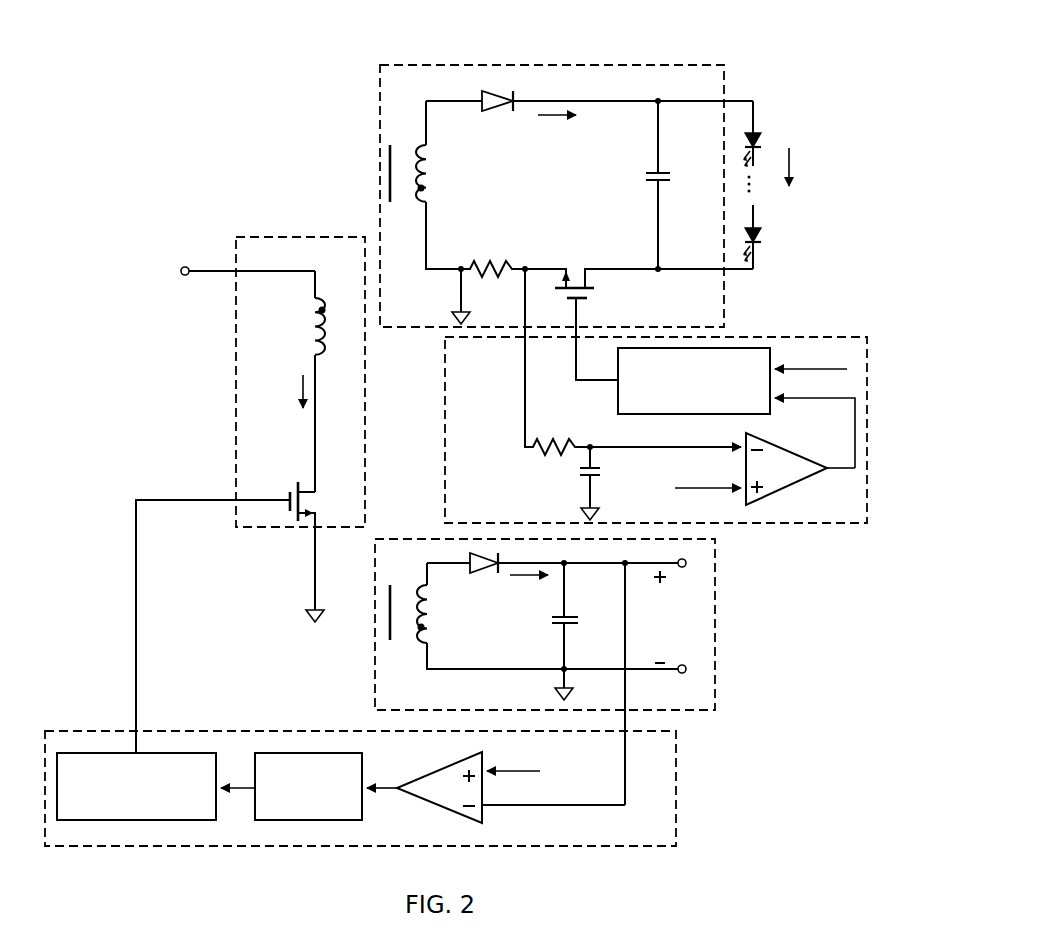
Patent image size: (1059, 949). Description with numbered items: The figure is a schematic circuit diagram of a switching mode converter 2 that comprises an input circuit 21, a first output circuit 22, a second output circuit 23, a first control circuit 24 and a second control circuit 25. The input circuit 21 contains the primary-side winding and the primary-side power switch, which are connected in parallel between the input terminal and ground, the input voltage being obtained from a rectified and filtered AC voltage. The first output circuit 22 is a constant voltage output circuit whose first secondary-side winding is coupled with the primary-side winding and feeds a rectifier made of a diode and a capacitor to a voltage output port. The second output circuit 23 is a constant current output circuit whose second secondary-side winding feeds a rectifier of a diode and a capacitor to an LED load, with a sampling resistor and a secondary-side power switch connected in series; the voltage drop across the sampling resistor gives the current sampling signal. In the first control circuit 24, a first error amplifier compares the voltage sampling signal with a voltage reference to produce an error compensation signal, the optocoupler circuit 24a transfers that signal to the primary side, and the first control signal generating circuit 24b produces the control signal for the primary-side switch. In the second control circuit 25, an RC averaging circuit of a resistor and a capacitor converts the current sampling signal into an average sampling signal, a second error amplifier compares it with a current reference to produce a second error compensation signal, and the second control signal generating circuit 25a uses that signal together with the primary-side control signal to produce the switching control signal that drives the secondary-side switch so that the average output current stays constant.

The switching mode converter 2 is at (296, 118).
The input circuit 21 is at (263, 237).
The first output circuit 22 is at (715, 645).
The second output circuit 23 is at (641, 65).
The first control circuit 24 is at (676, 818).
The optocoupler circuit 24a is at (308, 786).
The first control signal generating circuit 24b is at (136, 786).
The second control circuit 25 is at (800, 337).
The second control signal generating circuit 25a is at (694, 381).